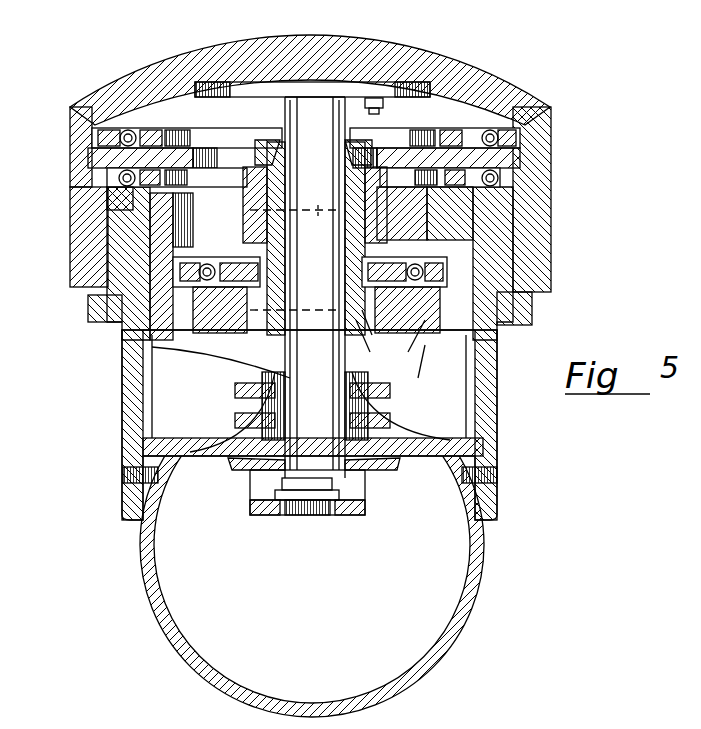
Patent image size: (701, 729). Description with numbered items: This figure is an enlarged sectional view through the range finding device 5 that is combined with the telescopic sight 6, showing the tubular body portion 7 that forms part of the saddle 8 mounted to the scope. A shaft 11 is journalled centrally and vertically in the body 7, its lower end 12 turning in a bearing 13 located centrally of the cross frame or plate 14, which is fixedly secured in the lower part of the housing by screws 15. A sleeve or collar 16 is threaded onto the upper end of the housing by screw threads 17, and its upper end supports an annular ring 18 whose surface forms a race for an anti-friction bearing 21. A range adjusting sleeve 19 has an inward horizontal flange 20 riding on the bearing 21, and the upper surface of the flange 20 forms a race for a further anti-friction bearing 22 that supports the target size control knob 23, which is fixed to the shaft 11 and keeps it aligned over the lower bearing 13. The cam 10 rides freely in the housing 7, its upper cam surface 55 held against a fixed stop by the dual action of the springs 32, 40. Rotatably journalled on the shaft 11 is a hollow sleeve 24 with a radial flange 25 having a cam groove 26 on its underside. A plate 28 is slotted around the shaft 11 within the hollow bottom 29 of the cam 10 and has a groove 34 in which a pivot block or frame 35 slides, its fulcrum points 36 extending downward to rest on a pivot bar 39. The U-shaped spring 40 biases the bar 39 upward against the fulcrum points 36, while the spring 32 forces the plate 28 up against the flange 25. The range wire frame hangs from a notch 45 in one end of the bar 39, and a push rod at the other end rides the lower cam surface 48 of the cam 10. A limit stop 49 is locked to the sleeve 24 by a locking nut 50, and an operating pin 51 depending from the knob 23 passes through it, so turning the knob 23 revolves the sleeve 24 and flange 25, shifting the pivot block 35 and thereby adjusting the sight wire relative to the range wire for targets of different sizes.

The range finding device 5 is at (545, 238).
The telescopic sight 6 is at (478, 560).
The tubular body portion 7 is at (490, 358).
The saddle 8 is at (495, 430).
The cam 10 is at (440, 365).
The shaft 11 is at (301, 160).
The lower end of the shaft 12 is at (300, 516).
The bearing 13 is at (262, 464).
The cross frame or plate 14 is at (432, 458).
The screws 15 is at (497, 470).
The sleeve or collar 16 is at (80, 280).
The screw threads 17 is at (272, 145).
The annular ring 18 is at (70, 214).
The range adjusting sleeve 19 is at (78, 198).
The horizontal flange 20 is at (163, 157).
The anti-friction bearing 21 is at (108, 178).
The anti-friction bearing 22 is at (95, 133).
The target size control knob 23 is at (345, 42).
The hollow sleeve 24 is at (355, 162).
The flange 25 is at (245, 342).
The cam groove 26 is at (232, 297).
The plate 28 is at (411, 346).
The hollow bottom 29 is at (422, 372).
The spring 32 is at (258, 514).
The groove 34 is at (371, 346).
The pivot block or frame 35 is at (280, 310).
The fulcrum points 36 is at (335, 373).
The pivot bar 39 is at (362, 428).
The U-shaped spring 40 is at (250, 433).
The notch 45 is at (362, 310).
The lower cam surface 48 is at (178, 357).
The limit stop 49 is at (410, 215).
The locking nut 50 is at (268, 147).
The operating pin 51 is at (380, 106).
The upper cam surface 55 is at (193, 223).